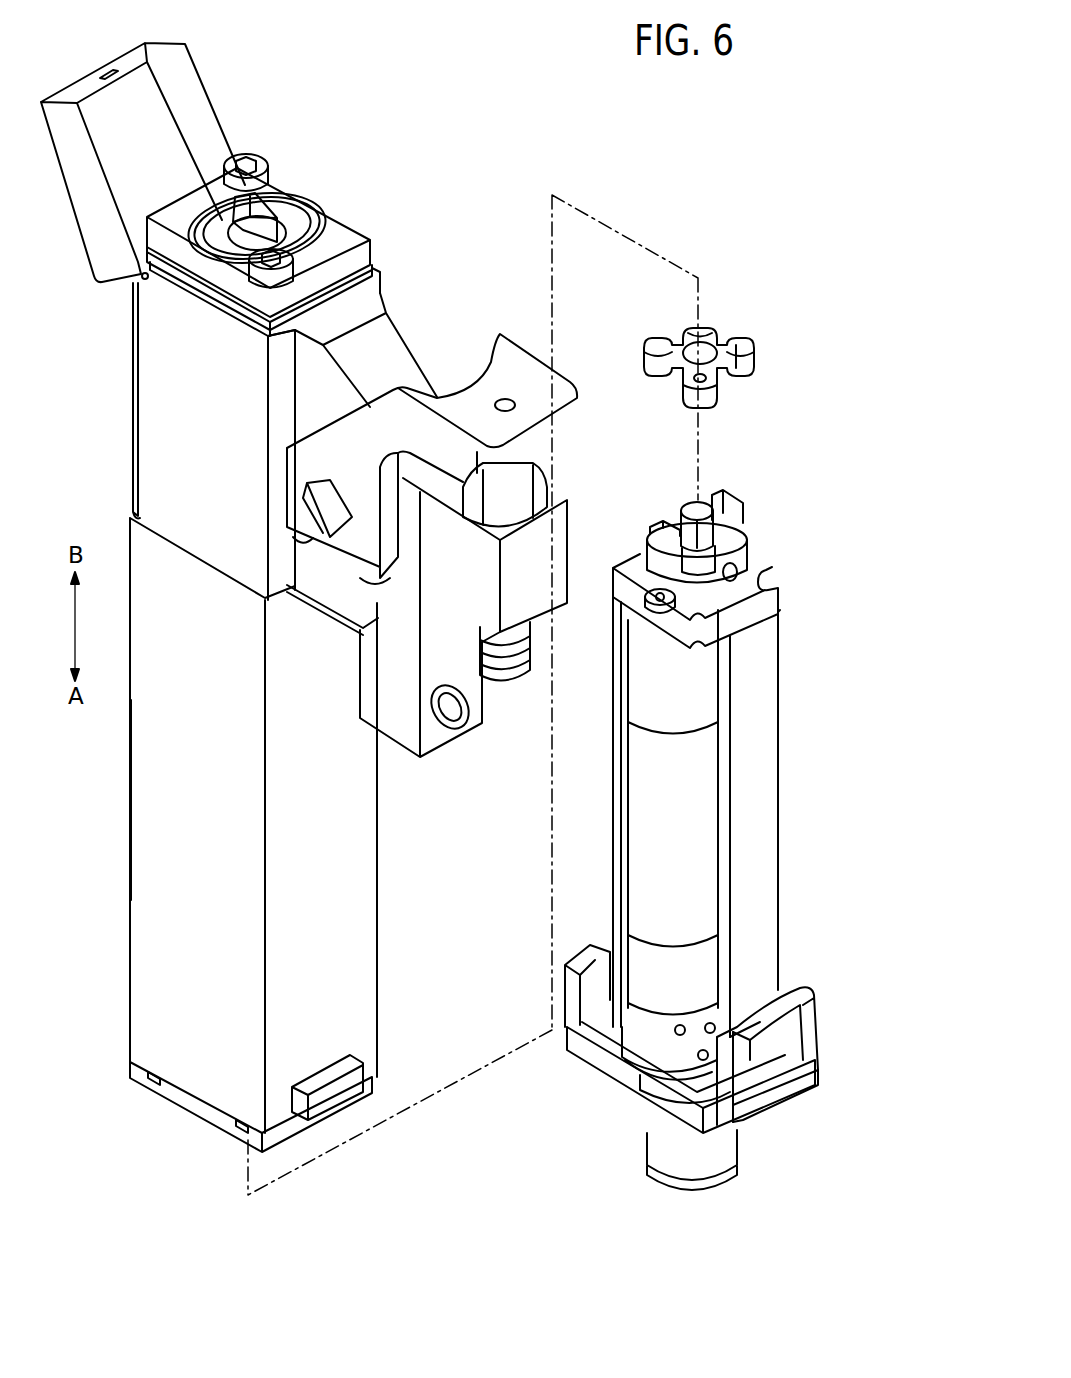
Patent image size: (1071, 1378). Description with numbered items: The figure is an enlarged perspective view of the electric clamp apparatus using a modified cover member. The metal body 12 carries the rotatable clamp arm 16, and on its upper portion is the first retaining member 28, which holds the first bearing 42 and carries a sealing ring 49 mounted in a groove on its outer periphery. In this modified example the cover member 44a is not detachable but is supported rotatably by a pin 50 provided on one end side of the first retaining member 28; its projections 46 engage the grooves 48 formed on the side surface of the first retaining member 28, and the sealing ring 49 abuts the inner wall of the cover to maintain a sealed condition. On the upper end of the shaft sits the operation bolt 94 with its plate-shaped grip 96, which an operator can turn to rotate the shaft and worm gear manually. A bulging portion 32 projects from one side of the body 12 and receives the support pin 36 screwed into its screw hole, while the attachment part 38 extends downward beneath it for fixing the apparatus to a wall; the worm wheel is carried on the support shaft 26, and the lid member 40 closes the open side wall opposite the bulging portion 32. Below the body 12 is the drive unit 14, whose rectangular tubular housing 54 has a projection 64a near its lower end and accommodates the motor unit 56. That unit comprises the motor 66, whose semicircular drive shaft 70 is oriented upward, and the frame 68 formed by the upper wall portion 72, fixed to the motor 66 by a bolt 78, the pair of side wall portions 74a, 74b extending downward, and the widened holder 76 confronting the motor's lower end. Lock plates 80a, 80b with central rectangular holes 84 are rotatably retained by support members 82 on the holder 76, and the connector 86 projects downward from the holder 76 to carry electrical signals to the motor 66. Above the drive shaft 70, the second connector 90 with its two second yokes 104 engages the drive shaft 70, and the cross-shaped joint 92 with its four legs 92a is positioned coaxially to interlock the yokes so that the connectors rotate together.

The body 12 is at (399, 316).
The drive unit 14 is at (383, 951).
The clamp arm 16 is at (508, 338).
The support shaft 26 is at (318, 513).
The first retaining member 28 is at (172, 215).
The bulging portion 32 is at (557, 557).
The support pin 36 is at (485, 522).
The attachment part 38 is at (425, 745).
The lid member 40 is at (130, 395).
The first bearing 42 is at (305, 228).
The cover member 44a is at (209, 74).
The projections 46 is at (108, 72).
The grooves 48 is at (362, 242).
The sealing ring 49 is at (185, 272).
The pin 50 is at (140, 292).
The housing 54 is at (156, 893).
The motor unit 56 is at (783, 754).
The projection 64a is at (330, 1095).
The motor 66 is at (642, 818).
The frame 68 is at (760, 859).
The drive shaft 70 is at (688, 505).
The upper wall portion 72 is at (770, 572).
The side wall portion 74a is at (770, 692).
The side wall portion 74b is at (615, 680).
The holder 76 is at (590, 1062).
The bolt 78 is at (660, 620).
The lock plate 80a is at (805, 1000).
The lock plate 80b is at (595, 955).
The support members 82 is at (780, 1103).
The holes 84 is at (590, 983).
The connector 86 is at (660, 1153).
The second connector 90 is at (740, 542).
The joint 92 is at (723, 332).
The legs 92a is at (742, 378).
The operation bolt 94 is at (278, 204).
The grip 96 is at (250, 217).
The second yokes 104 is at (660, 522).